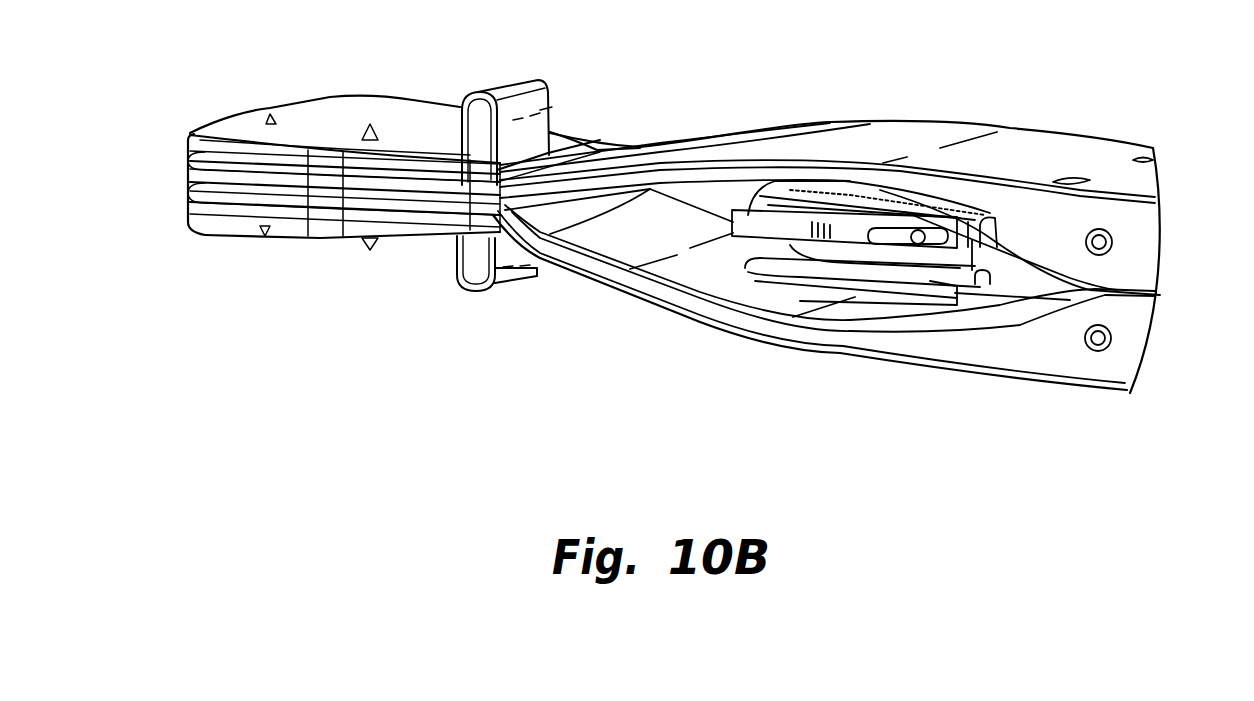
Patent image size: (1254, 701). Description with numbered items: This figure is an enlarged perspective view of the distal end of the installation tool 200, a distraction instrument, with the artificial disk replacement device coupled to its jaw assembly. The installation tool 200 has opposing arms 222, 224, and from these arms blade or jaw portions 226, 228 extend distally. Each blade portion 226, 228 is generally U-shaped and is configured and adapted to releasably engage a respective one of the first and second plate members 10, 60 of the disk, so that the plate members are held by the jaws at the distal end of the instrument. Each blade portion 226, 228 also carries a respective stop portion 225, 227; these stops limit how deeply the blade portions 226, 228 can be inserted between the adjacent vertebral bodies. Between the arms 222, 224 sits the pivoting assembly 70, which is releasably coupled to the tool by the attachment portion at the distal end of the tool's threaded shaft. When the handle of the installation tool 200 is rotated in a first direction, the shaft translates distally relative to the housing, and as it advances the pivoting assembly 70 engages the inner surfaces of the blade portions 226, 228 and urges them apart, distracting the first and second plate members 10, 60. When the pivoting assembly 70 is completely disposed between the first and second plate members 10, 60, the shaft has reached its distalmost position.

The first plate member 10 is at (359, 262).
The second plate member 60 is at (383, 113).
The pivoting assembly 70 is at (887, 298).
The installation tool 200 is at (810, 51).
The arm 222 is at (1085, 132).
The arm 224 is at (1107, 377).
The stop portion 225 is at (527, 83).
The blade portion 226 is at (242, 180).
The stop portion 227 is at (478, 270).
The blade portion 228 is at (243, 205).